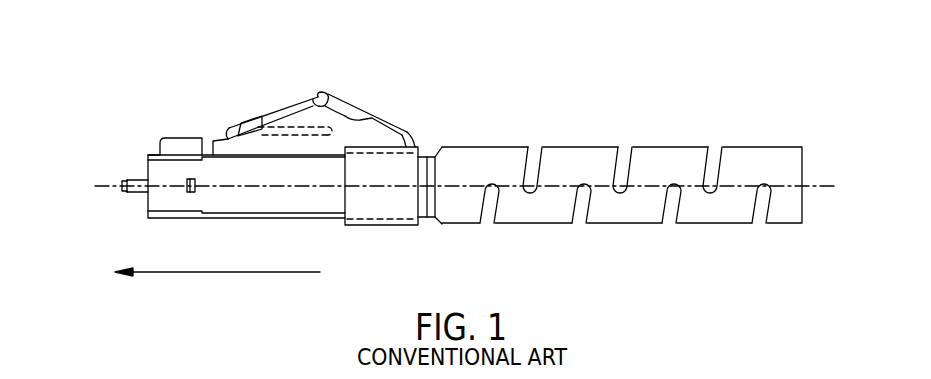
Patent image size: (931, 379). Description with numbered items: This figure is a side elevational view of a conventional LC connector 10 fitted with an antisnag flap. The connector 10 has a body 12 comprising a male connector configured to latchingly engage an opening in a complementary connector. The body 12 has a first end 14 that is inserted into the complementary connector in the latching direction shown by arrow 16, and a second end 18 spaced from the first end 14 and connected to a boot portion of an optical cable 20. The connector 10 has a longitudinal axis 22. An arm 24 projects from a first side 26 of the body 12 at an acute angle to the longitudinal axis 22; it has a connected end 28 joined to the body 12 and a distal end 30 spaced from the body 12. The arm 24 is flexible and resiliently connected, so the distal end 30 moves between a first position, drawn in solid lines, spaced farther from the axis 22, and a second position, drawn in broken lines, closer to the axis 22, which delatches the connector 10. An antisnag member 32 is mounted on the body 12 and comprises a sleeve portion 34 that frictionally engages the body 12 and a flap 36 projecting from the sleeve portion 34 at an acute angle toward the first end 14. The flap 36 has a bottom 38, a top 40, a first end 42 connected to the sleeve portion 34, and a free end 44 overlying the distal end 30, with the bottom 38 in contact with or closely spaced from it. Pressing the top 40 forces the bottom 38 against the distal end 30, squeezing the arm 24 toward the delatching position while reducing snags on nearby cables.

The LC connector 10 is at (236, 59).
The body 12 is at (160, 173).
The first end 14 is at (148, 203).
The arrow 16 is at (222, 270).
The second end 18 is at (424, 225).
The optical cable 20 is at (637, 218).
The longitudinal axis 22 is at (104, 183).
The arm 24 is at (213, 110).
The first side 26 is at (158, 154).
The connected end 28 is at (183, 146).
The distal end 30 is at (316, 105).
The antisnag member 32 is at (376, 98).
The sleeve portion 34 is at (382, 228).
The flap 36 is at (347, 107).
The bottom 38 is at (316, 96).
The top 40 is at (403, 133).
The first end 42 is at (417, 146).
The free end 44 is at (320, 96).